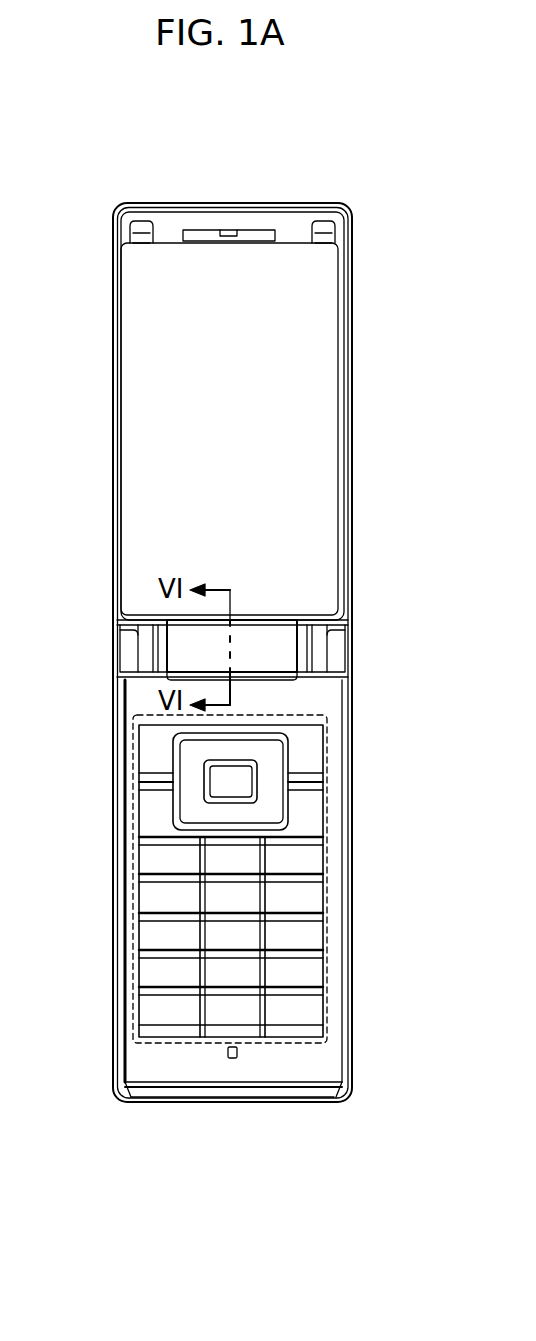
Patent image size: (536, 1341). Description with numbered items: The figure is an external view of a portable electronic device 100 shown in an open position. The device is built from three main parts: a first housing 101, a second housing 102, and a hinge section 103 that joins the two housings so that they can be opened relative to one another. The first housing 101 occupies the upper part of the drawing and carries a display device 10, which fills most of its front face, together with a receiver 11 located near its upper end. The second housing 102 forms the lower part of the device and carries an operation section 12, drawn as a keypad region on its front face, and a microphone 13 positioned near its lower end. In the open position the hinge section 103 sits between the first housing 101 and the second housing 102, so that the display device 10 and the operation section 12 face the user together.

The portable electronic device 100 is at (492, 118).
The first housing 101 is at (113, 388).
The second housing 102 is at (345, 867).
The hinge section 103 is at (275, 635).
The display device 10 is at (310, 398).
The receiver 11 is at (222, 228).
The operation section 12 is at (130, 790).
The microphone 13 is at (231, 1060).